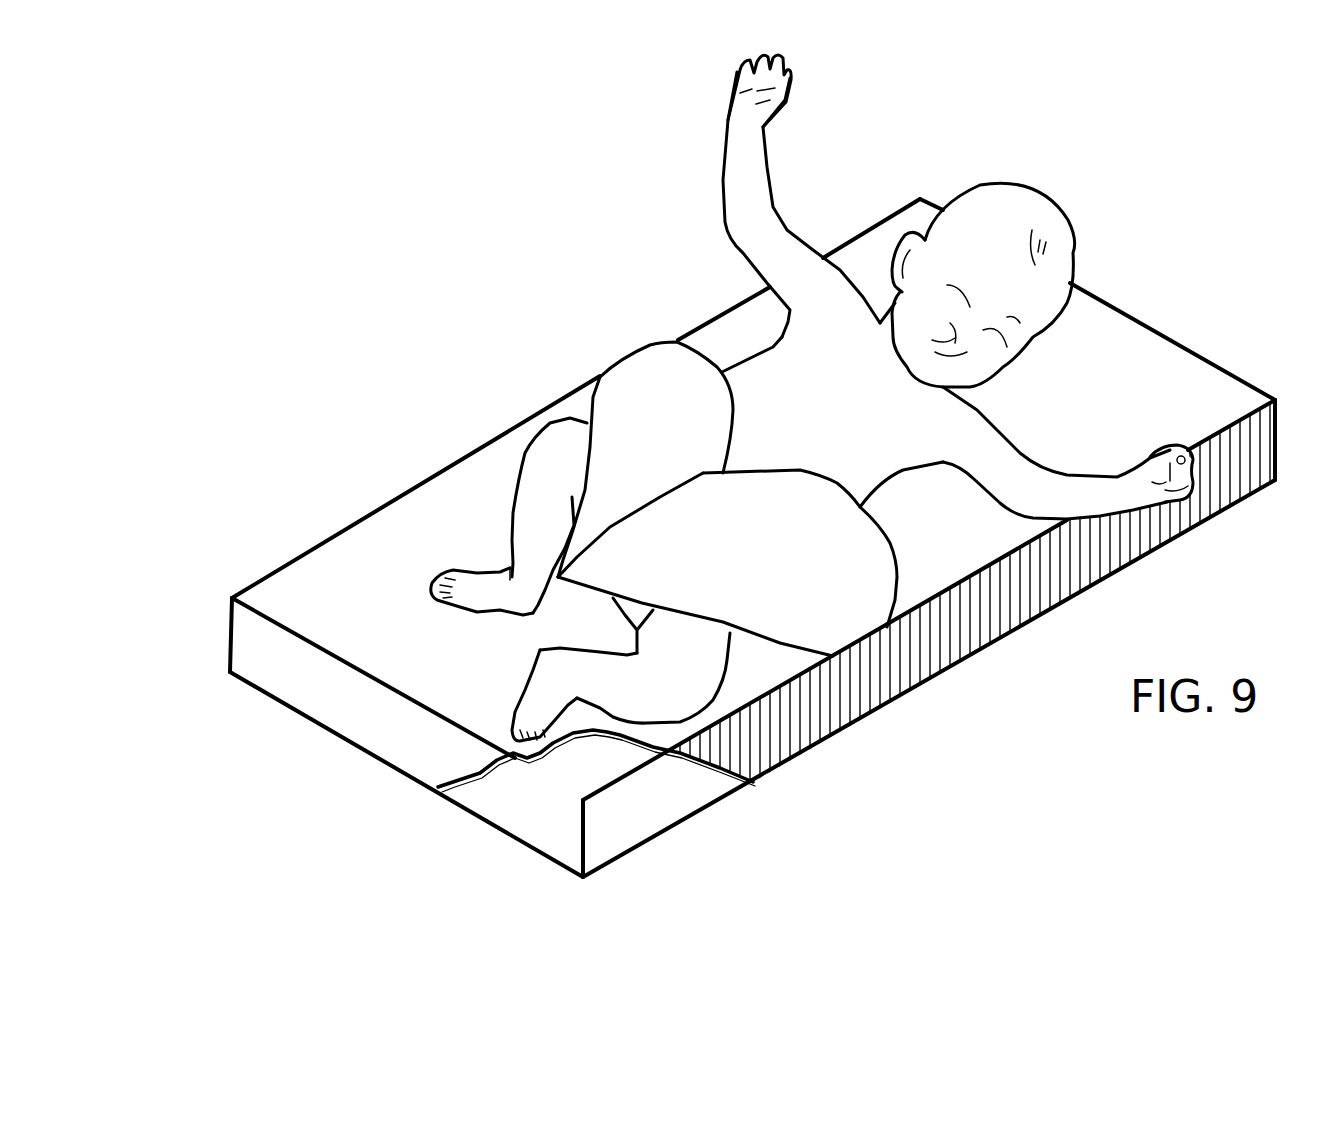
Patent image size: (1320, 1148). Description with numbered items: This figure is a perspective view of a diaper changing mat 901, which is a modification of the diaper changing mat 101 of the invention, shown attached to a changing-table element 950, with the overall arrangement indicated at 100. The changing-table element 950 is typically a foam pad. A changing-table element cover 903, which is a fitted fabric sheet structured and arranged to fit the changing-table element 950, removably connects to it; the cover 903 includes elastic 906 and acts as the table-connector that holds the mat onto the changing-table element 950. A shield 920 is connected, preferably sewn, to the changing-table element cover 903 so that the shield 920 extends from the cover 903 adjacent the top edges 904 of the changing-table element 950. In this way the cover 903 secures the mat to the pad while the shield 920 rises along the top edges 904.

The infant monitoring system 100 is at (247, 132).
The diaper changing mat 101 is at (249, 192).
The diaper changing mat 901 is at (249, 256).
The shield 920 is at (619, 342).
The changing-table element cover 903 is at (273, 685).
The top edges 904 is at (608, 787).
The elastic 906 is at (468, 788).
The changing-table element 950 is at (683, 797).